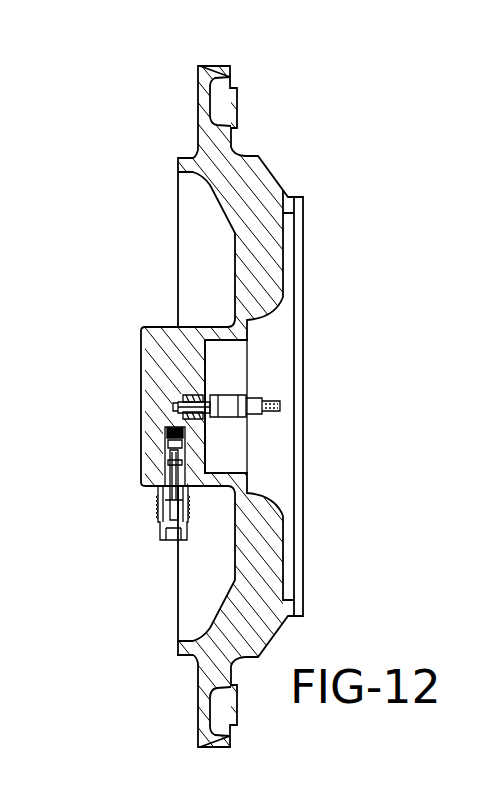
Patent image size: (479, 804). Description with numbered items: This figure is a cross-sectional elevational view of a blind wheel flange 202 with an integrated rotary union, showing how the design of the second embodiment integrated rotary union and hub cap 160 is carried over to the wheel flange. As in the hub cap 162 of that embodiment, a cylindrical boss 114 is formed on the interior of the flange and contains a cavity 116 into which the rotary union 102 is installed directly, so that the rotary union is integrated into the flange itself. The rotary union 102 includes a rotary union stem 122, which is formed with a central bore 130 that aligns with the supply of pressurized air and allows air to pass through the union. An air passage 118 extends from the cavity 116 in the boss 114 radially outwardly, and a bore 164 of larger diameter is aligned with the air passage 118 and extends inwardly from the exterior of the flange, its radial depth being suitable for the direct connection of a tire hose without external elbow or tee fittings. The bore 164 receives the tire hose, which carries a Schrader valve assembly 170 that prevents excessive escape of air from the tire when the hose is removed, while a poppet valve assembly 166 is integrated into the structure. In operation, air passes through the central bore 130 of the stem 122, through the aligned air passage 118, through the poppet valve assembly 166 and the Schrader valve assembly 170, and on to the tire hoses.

The blind wheel flange 202 is at (323, 133).
The rotary union 102 is at (236, 376).
The cavity 116 is at (173, 386).
The boss 114 is at (196, 393).
The air passage 118 is at (170, 404).
The central bore 130 is at (281, 408).
The rotary union stem 122 is at (230, 427).
The second embodiment integrated rotary union and hub cap 160 is at (133, 415).
The hub cap 162 is at (140, 456).
The bore 164 is at (162, 486).
The poppet valve assembly 166 is at (157, 434).
The Schrader valve assembly 170 is at (189, 464).